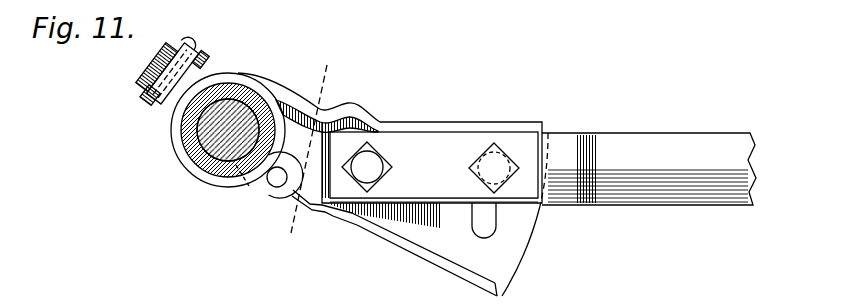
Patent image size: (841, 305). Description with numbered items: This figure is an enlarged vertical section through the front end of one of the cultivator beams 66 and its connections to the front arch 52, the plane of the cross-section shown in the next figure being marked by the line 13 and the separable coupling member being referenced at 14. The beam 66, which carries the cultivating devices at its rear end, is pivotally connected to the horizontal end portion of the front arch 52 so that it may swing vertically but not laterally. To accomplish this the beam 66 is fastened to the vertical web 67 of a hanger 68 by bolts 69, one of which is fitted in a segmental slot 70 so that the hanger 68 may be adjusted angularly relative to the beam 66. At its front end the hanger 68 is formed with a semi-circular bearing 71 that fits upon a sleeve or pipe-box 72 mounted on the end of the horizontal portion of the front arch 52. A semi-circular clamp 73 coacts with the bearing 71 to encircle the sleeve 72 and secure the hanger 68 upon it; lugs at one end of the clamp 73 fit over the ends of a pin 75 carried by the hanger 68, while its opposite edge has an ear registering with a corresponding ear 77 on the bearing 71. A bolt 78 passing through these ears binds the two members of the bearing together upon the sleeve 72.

The section line 13 is at (343, 76).
The figure reference 14 is at (291, 190).
The front arch 52 is at (215, 147).
The beam 66 is at (617, 142).
The vertical web 67 is at (435, 230).
The hanger 68 is at (453, 273).
The bolts 69 is at (370, 167).
The segmental slot 70 is at (490, 232).
The semi-circular bearing 71 is at (238, 77).
The sleeve or pipe-box 72 is at (228, 174).
The semi-circular clamp 73 is at (203, 173).
The pin 75 is at (271, 189).
The ear 77 is at (174, 40).
The bolt 78 is at (201, 53).